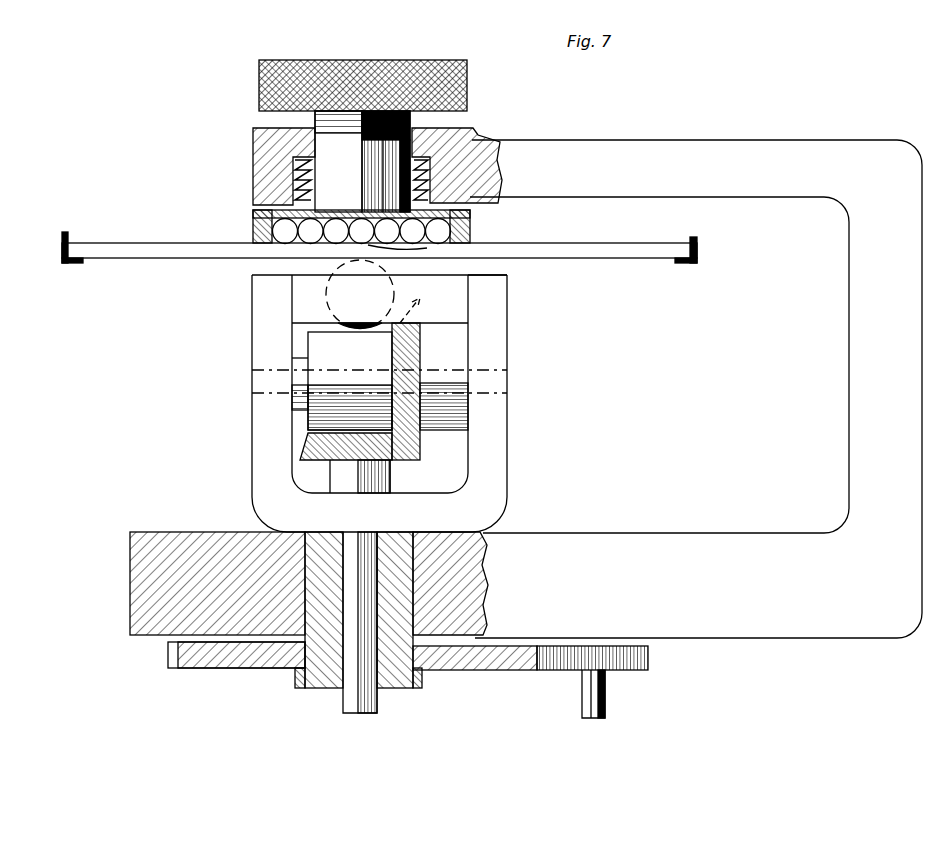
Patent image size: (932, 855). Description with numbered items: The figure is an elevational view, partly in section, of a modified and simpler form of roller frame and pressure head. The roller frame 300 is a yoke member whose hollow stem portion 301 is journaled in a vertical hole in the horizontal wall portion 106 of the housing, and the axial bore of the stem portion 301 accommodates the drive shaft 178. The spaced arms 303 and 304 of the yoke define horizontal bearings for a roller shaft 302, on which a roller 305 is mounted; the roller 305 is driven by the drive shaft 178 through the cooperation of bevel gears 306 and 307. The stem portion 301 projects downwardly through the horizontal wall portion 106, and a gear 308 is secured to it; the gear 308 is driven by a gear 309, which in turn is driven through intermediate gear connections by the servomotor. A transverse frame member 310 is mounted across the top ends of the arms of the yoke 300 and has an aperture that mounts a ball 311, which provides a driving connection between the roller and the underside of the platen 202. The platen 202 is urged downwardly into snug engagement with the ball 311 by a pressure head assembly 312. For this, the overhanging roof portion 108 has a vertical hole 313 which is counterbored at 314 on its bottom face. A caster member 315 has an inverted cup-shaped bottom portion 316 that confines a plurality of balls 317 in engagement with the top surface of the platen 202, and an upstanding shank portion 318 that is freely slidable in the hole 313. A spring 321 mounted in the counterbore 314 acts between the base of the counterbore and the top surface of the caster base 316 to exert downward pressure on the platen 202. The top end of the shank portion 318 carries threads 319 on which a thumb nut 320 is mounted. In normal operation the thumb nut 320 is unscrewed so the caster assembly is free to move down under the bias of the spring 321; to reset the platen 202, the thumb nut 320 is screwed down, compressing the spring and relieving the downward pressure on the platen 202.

The horizontal wall portion 106 is at (168, 532).
The overhanging roof portion 108 is at (760, 198).
The drive shaft 178 is at (347, 713).
The platen 202 is at (150, 260).
The roller frame 300 is at (384, 396).
The hollow stem portion 301 is at (380, 690).
The roller shaft 302 is at (483, 370).
The yoke arm 303 is at (255, 428).
The yoke arm 304 is at (492, 420).
The roller 305 is at (315, 345).
The bevel gear 306 is at (398, 462).
The bevel gear 307 is at (420, 442).
The gear 308 is at (492, 670).
The gear 309 is at (648, 660).
The transverse frame member 310 is at (455, 275).
The ball 311 is at (340, 272).
The pressure head assembly 312 is at (472, 212).
The vertical hole 313 is at (313, 148).
The counterbore 314 is at (290, 195).
The caster member 315 is at (470, 140).
The cup-shaped bottom portion 316 is at (470, 233).
The balls 317 is at (413, 249).
The shank portion 318 is at (410, 140).
The threads 319 is at (312, 118).
The thumb nut 320 is at (467, 72).
The spring 321 is at (402, 185).